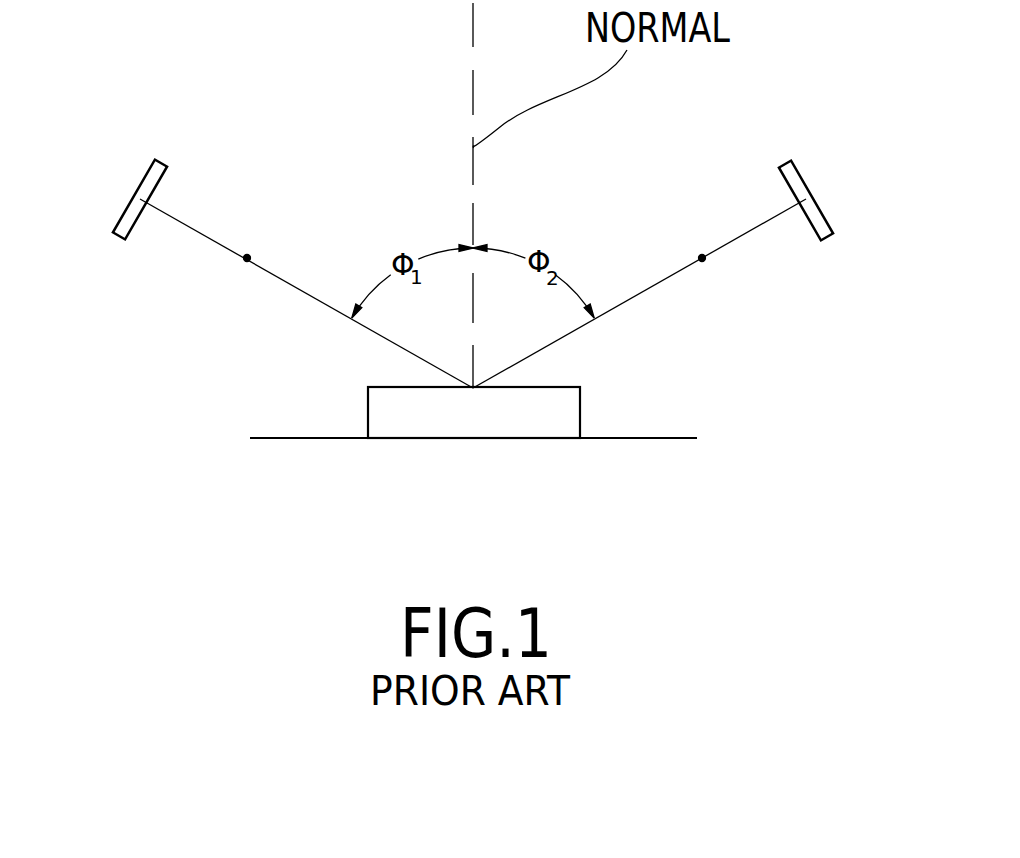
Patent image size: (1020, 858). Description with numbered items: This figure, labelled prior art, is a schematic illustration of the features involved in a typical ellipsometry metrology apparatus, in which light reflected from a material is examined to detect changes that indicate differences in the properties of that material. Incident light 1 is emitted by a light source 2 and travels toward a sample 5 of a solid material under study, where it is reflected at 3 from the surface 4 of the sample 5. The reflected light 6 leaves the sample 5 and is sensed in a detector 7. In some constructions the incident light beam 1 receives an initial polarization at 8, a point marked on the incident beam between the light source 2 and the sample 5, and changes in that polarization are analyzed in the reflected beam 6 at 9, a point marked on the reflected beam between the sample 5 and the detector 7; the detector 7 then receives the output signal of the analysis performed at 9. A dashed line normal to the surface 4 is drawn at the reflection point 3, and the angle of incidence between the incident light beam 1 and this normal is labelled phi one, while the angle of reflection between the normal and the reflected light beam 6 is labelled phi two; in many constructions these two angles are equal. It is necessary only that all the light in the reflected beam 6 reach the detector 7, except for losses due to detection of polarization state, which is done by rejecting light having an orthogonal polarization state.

The incident light 1 is at (203, 230).
The light source 2 is at (137, 183).
The reflection point 3 is at (470, 384).
The surface 4 is at (412, 385).
The sample 5 is at (440, 438).
The reflected light 6 is at (743, 235).
The detector 7 is at (800, 190).
The initial polarization 8 is at (247, 258).
The analysis 9 is at (702, 258).